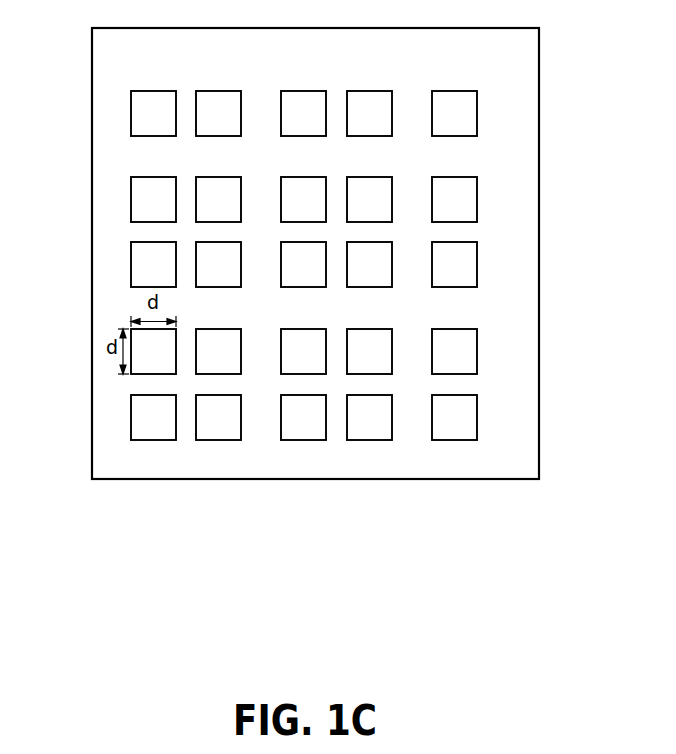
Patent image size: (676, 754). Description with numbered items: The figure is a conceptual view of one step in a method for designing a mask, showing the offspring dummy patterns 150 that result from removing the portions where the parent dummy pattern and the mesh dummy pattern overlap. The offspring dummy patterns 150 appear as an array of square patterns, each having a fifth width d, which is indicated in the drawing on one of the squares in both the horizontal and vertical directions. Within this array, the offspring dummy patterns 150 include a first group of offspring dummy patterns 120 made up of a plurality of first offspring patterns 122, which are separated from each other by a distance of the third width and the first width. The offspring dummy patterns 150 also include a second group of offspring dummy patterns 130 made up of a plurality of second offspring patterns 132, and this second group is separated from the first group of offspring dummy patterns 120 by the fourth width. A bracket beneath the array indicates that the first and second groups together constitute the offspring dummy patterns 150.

The first group of offspring dummy patterns 120 is at (186, 434).
The first offspring patterns 122 is at (186, 384).
The second group of offspring dummy patterns 130 is at (336, 434).
The second offspring patterns 132 is at (336, 384).
The offspring dummy patterns 150 is at (261, 458).